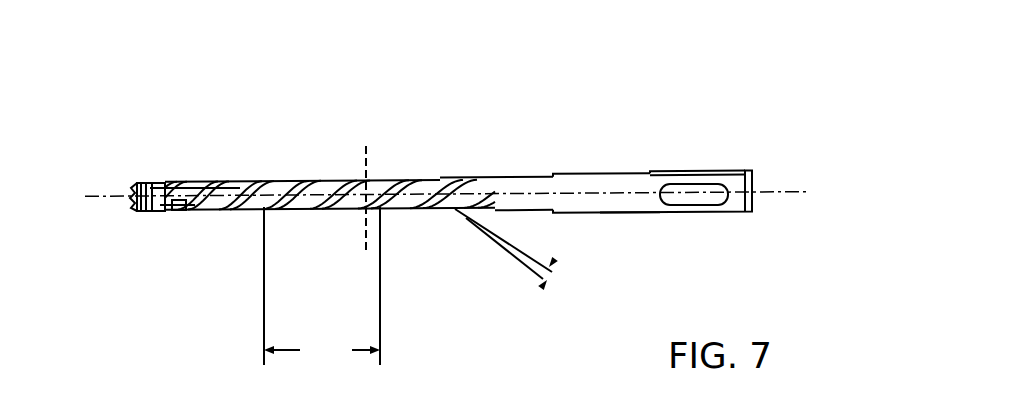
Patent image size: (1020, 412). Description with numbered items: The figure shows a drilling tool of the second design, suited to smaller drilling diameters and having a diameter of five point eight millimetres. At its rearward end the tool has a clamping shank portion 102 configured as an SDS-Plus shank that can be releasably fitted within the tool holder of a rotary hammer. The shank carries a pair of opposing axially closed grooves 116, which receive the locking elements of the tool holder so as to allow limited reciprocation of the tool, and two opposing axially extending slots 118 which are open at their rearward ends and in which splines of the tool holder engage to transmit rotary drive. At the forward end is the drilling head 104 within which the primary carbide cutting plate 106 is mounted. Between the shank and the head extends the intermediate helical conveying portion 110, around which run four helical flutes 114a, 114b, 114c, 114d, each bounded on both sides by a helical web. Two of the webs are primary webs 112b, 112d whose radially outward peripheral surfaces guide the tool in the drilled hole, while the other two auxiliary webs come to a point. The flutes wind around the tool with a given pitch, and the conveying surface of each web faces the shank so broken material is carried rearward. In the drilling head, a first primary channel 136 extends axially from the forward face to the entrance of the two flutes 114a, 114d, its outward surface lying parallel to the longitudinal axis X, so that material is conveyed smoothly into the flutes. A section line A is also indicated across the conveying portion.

The helical conveying portion 110 is at (467, 91).
The clamping shank portion 102 is at (750, 93).
The drilling head 104 is at (130, 175).
The primary carbide cutting plate 106 is at (136, 198).
The first primary channel 136 is at (157, 206).
The helical flute 114a is at (178, 207).
The helical flute 114b is at (248, 212).
The helical flute 114c is at (220, 183).
The helical flute 114d is at (173, 183).
The primary web 112b is at (370, 186).
The primary web 112d is at (332, 208).
The axially extending slot 118 is at (712, 173).
The axially closed groove 116 is at (705, 207).
The longitudinal axis X is at (633, 205).
The section line A- A is at (358, 146).